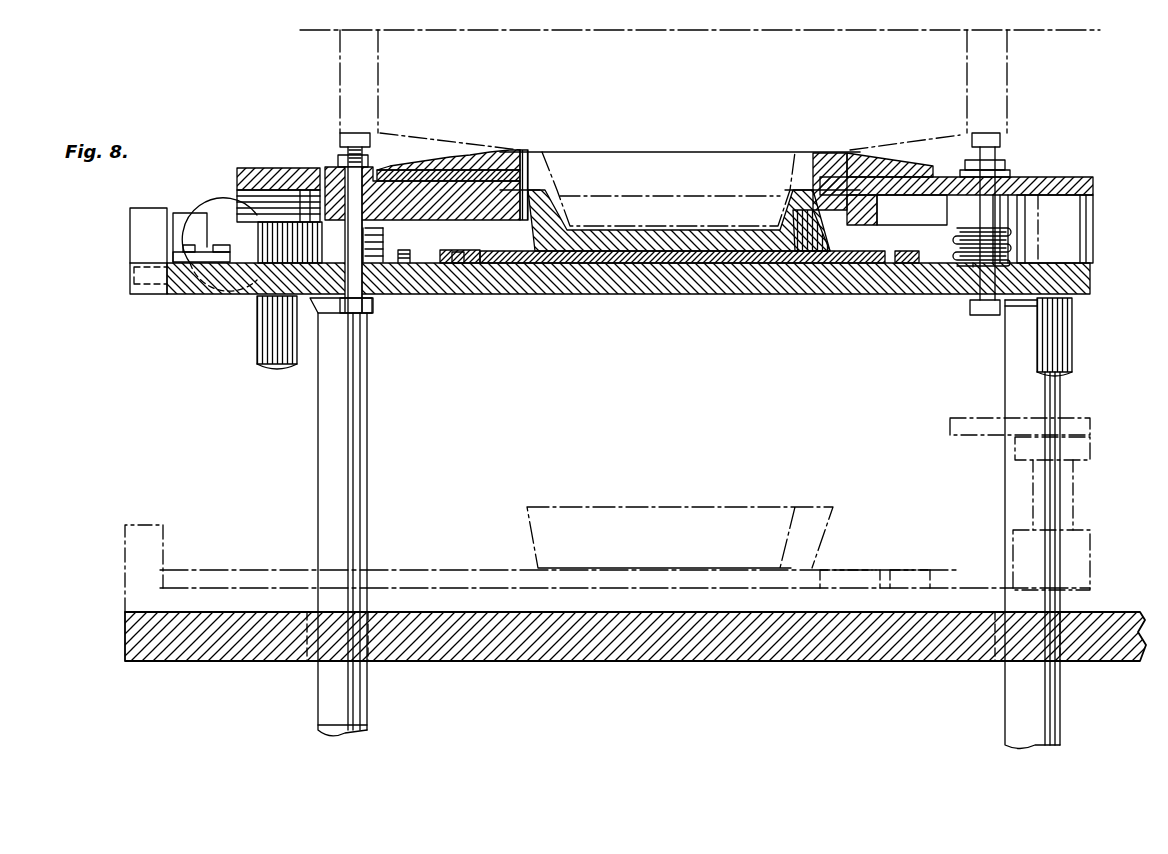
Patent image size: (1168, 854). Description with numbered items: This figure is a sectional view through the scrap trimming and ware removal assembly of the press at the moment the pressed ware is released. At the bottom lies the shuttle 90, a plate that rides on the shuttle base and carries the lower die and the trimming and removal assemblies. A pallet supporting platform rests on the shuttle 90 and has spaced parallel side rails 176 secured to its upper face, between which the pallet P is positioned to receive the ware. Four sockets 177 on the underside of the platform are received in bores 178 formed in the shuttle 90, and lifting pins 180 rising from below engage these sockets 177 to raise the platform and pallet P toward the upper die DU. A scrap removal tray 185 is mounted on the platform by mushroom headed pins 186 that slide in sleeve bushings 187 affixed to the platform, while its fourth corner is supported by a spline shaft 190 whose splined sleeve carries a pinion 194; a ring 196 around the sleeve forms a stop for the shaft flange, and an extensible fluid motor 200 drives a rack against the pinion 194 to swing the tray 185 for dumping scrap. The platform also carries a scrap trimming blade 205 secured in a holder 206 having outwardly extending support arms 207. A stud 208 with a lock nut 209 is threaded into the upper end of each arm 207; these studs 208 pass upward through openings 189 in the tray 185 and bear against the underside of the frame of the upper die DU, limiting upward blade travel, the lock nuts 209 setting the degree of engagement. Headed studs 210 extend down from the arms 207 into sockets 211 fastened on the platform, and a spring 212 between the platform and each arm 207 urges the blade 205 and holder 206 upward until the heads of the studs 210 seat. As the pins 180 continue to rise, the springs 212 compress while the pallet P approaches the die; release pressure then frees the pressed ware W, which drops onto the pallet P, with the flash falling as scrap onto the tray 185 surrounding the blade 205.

The upper die DU is at (1007, 65).
The pallet P is at (712, 290).
The shuttle 90 is at (608, 666).
The bores 178 is at (368, 670).
The lifting pins 180 is at (318, 470).
The side rails 176 is at (475, 262).
The pressed ware W is at (693, 237).
The openings 189 is at (420, 166).
The scrap trimming blade 205 is at (530, 170).
The support arms 207 is at (450, 225).
The holder 206 is at (852, 228).
The scrap removal tray 185 is at (1097, 186).
The sleeve bushings 187 is at (1095, 255).
The spring 212 is at (978, 243).
The sockets 211 is at (383, 258).
The stud 208 is at (342, 137).
The lock nut 209 is at (340, 160).
The ring 196 is at (250, 210).
The extensible fluid motor 200 is at (215, 208).
The pinion 194 is at (262, 243).
The spline shaft 190 is at (255, 348).
The sockets 177 is at (372, 305).
The headed studs 210 is at (980, 314).
The mushroom headed pins 186 is at (1072, 345).